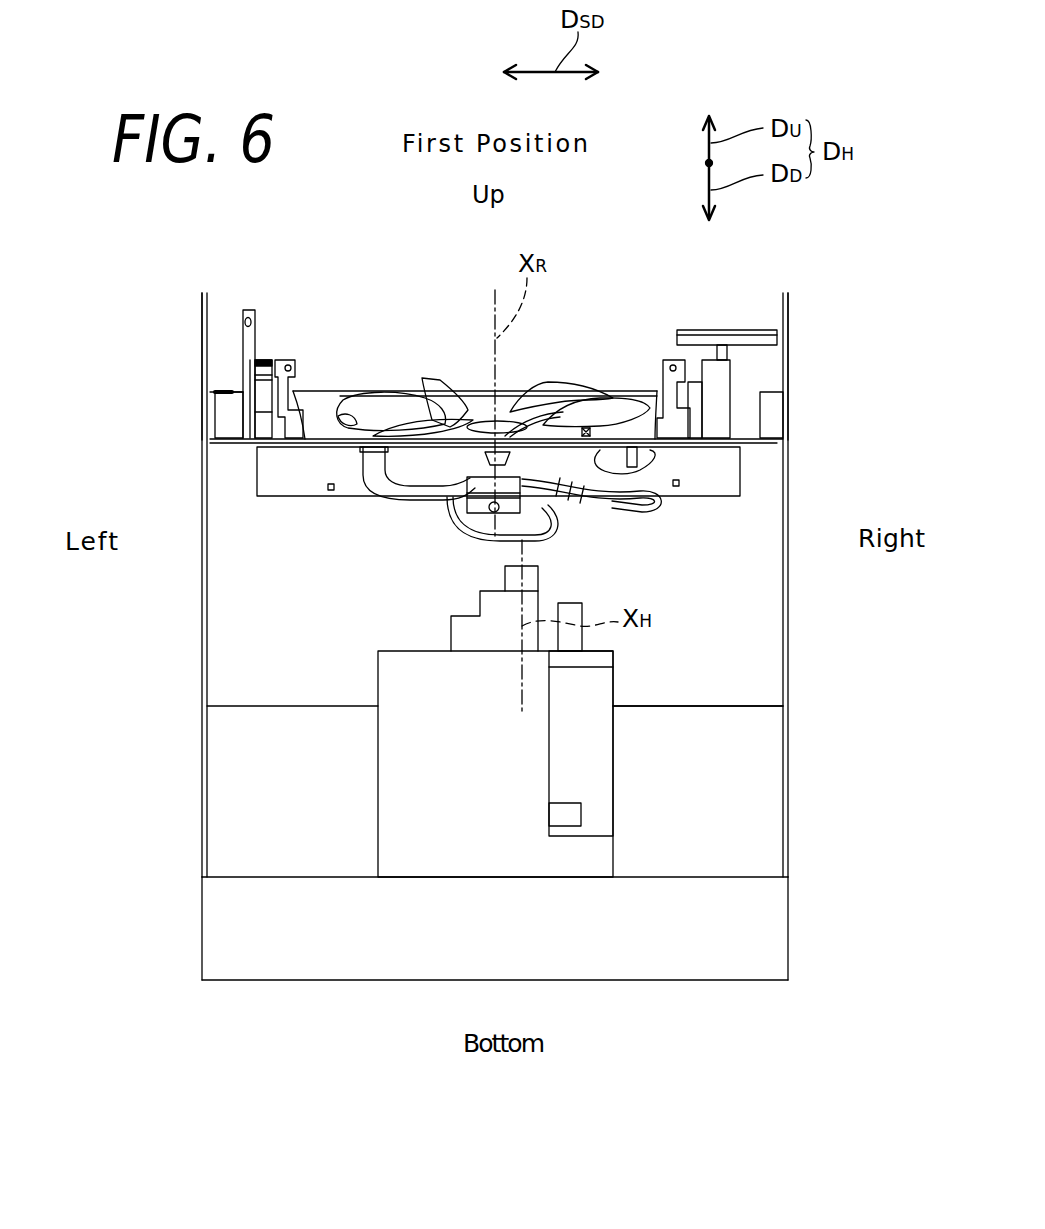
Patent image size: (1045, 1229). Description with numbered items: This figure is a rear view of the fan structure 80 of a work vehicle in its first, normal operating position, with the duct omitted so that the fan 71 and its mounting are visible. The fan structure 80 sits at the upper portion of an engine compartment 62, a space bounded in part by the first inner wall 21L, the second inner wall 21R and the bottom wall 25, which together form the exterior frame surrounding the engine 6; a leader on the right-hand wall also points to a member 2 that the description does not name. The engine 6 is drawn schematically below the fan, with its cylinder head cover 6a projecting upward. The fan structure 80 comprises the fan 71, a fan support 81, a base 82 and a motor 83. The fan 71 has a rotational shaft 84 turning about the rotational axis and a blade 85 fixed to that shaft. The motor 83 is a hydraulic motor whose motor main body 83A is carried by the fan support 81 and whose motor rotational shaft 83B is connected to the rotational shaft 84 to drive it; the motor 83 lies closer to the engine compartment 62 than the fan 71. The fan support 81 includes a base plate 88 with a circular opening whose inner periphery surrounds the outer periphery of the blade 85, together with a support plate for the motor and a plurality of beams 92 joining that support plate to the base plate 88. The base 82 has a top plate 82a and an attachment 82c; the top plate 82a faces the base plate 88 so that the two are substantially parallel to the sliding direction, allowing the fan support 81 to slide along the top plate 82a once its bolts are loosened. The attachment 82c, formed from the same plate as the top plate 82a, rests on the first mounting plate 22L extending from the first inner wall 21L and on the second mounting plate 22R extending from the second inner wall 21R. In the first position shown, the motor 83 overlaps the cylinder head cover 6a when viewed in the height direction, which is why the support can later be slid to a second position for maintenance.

The housing 2 is at (788, 580).
The engine 6 is at (395, 796).
The cylinder head cover 6a is at (513, 580).
The second inner wall 21R is at (207, 850).
The first inner wall 21L is at (788, 850).
The second mounting plate 22R is at (213, 418).
The first mounting plate 22L is at (778, 420).
The bottom wall 25 is at (650, 982).
The engine compartment 62 is at (735, 657).
The fan 71 is at (550, 385).
The fan structure 80 is at (489, 417).
The fan support 81 is at (380, 457).
The base 82 is at (713, 445).
The top plate 82a is at (313, 442).
The attachment 82c is at (227, 418).
The motor 83 is at (581, 509).
The motor main body 83A is at (528, 528).
The motor rotational shaft 83B is at (555, 497).
The rotational shaft 84 is at (453, 390).
The blade 85 is at (588, 395).
The base plate 88 is at (328, 417).
The beams 92 is at (387, 478).